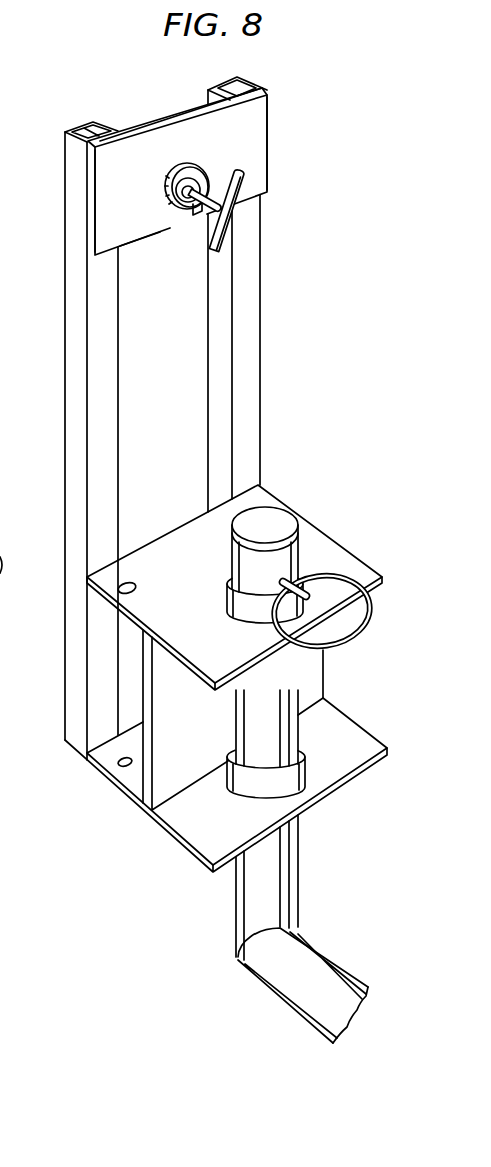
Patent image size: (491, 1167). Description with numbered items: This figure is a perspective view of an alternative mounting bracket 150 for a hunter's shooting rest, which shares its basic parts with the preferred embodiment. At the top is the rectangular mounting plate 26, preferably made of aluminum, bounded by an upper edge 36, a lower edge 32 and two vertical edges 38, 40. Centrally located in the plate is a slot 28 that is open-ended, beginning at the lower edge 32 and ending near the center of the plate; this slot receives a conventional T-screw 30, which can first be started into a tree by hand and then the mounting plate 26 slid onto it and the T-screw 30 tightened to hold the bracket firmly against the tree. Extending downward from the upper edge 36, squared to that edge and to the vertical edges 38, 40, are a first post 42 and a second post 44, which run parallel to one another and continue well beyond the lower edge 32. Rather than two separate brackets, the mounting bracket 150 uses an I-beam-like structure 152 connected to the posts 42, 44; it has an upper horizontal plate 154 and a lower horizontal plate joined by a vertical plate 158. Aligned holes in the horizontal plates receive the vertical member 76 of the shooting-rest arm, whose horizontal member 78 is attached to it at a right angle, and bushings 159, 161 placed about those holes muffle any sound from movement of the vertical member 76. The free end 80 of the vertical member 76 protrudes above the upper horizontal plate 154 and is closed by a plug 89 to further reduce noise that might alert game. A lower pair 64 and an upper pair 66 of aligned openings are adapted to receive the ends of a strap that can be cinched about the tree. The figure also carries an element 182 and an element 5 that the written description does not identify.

The mounting plate 26 is at (139, 207).
The slot 28 is at (178, 212).
The T-screw 30 is at (243, 180).
The lower edge 32 is at (141, 240).
The upper edge 36 is at (158, 125).
The vertical edge 38 is at (95, 212).
The vertical edge 40 is at (267, 122).
The first post 42 is at (74, 358).
The second post 44 is at (260, 352).
The mounting bracket 150 is at (368, 271).
The I-beam-like structure 152 is at (137, 842).
The upper horizontal plate 154 is at (205, 620).
The vertical plate 158 is at (207, 734).
The bushing 159 is at (228, 593).
The bushing 161 is at (294, 785).
The free end 80 is at (299, 563).
The plug 89 is at (281, 521).
The pull ring 182 is at (358, 636).
The vertical member 76 is at (299, 692).
The horizontal member 78 is at (330, 970).
The lower pair of openings 64 is at (120, 764).
The upper pair of openings 66 is at (117, 590).
The partial numeral (cut off at sheet edge) 5 is at (8, 521).